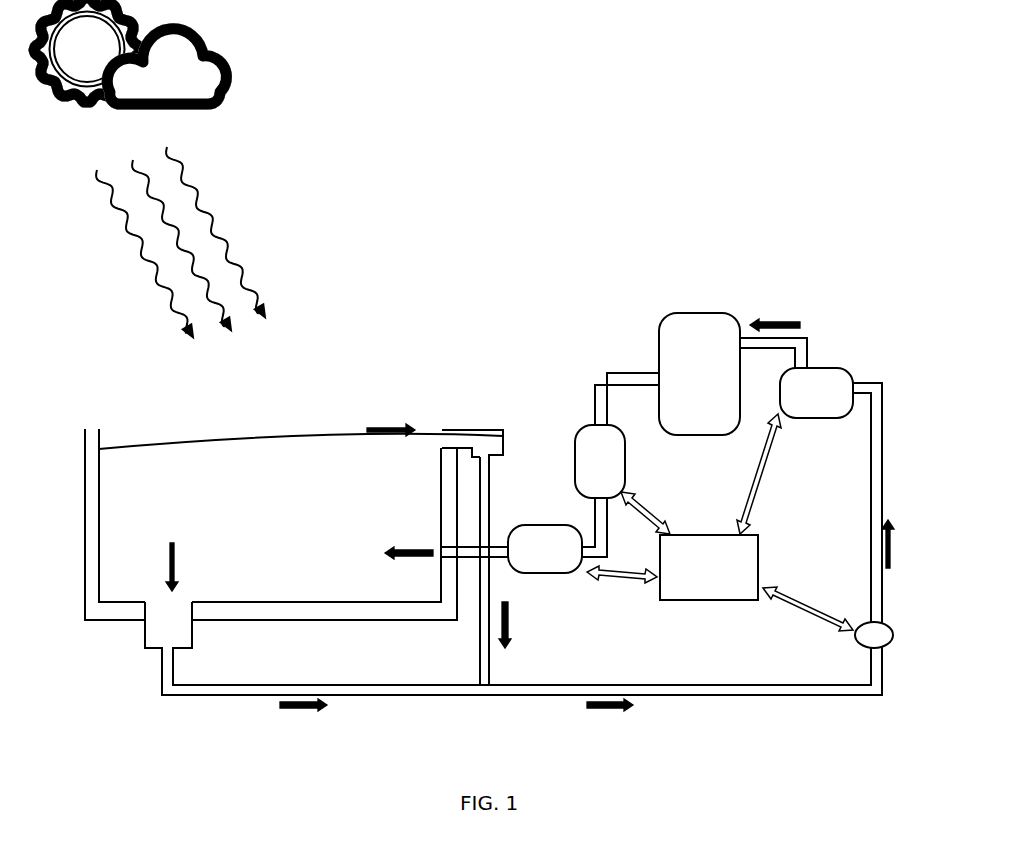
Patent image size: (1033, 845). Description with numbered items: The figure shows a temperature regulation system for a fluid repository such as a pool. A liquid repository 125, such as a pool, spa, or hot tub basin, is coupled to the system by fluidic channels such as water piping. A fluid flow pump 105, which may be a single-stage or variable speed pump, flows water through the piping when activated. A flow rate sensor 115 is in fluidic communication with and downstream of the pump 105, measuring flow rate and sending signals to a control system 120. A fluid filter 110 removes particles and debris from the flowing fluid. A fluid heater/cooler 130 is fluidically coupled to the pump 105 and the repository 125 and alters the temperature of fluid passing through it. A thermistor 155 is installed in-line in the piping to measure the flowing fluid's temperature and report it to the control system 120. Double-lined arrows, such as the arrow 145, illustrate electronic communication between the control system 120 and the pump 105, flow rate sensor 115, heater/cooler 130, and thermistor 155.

The fluid flow pump 105 is at (823, 367).
The fluid filter 110 is at (728, 312).
The flow rate sensor 115 is at (578, 428).
The control system 120 is at (760, 557).
The liquid repository 125 is at (85, 525).
The fluid heater/cooler 130 is at (570, 524).
The arrow 145 is at (663, 511).
The thermistor 155 is at (893, 628).